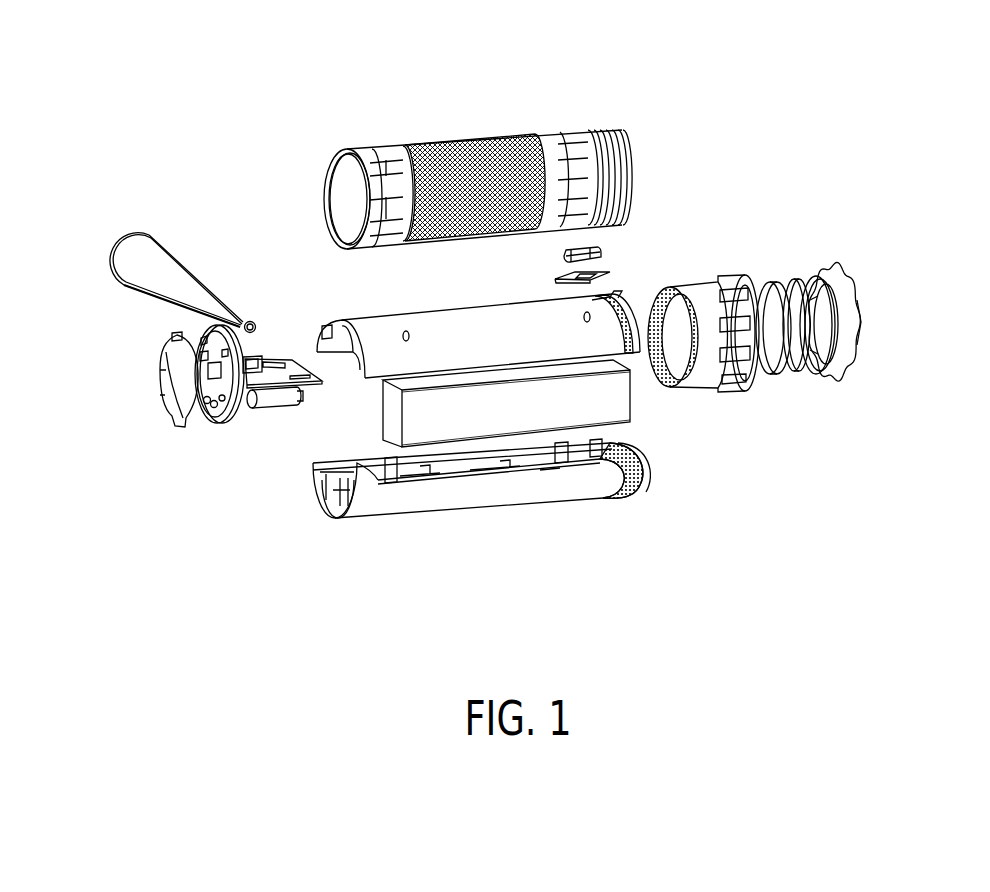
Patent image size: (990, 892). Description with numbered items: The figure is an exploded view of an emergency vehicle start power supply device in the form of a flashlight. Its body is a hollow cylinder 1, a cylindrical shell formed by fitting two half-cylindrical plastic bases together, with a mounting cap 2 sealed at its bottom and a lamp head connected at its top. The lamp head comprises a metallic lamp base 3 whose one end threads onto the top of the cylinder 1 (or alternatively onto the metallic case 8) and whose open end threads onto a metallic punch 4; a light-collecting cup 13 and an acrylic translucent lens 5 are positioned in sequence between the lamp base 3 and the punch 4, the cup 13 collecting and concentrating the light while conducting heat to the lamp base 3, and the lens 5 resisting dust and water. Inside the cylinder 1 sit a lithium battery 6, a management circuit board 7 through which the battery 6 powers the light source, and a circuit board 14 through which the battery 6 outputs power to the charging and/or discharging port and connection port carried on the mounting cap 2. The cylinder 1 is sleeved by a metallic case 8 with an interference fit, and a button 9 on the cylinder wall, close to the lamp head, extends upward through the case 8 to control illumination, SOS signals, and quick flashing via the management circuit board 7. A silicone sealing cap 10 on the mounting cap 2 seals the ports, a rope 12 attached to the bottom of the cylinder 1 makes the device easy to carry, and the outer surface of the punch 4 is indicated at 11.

The hollow cylinder 1 is at (600, 500).
The mounting cap 2 is at (215, 422).
The lamp base 3 is at (727, 283).
The metallic punch 4 is at (837, 280).
The acrylic translucent lens 5 is at (790, 277).
The lithium battery 6 is at (620, 415).
The management circuit board 7 is at (608, 277).
The metallic case 8 is at (565, 135).
The button 9 is at (602, 253).
The silicone sealing cap 10 is at (172, 415).
The bezel outer surface 11 is at (862, 315).
The rope 12 is at (158, 240).
The light-collecting cup 13 is at (773, 277).
The circuit board 14 is at (284, 362).